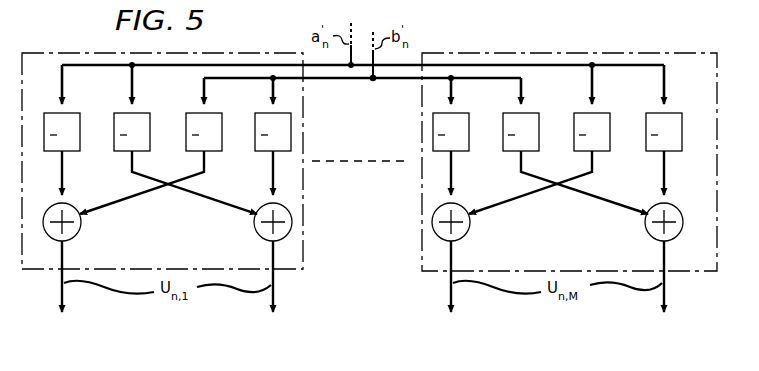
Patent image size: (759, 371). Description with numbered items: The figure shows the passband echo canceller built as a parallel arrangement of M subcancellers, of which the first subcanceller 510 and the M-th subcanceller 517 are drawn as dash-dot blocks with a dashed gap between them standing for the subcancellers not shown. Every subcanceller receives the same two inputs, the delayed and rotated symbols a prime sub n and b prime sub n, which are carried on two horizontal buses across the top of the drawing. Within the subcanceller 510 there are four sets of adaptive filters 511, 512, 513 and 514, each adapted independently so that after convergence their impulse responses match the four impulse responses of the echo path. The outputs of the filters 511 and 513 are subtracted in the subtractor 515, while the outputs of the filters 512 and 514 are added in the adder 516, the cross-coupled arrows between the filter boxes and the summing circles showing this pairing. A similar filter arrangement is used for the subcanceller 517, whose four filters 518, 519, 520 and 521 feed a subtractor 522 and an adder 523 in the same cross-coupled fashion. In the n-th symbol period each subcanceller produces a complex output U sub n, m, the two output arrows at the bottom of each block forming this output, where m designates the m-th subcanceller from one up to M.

The subcanceller 510 is at (69, 51).
The adaptive filter 511 is at (44, 122).
The adaptive filter 512 is at (113, 122).
The adaptive filter 513 is at (186, 122).
The adaptive filter 514 is at (255, 122).
The subtractor 515 is at (72, 238).
The adder 516 is at (263, 238).
The subcanceller 517 is at (664, 51).
The multiplier cM,1 518 is at (471, 122).
The multiplier cM,2 519 is at (541, 122).
The multiplier dM,1 520 is at (613, 122).
The multiplier dM,2 521 is at (685, 122).
The summing circuit 522 is at (461, 238).
The summing circuit 523 is at (667, 242).